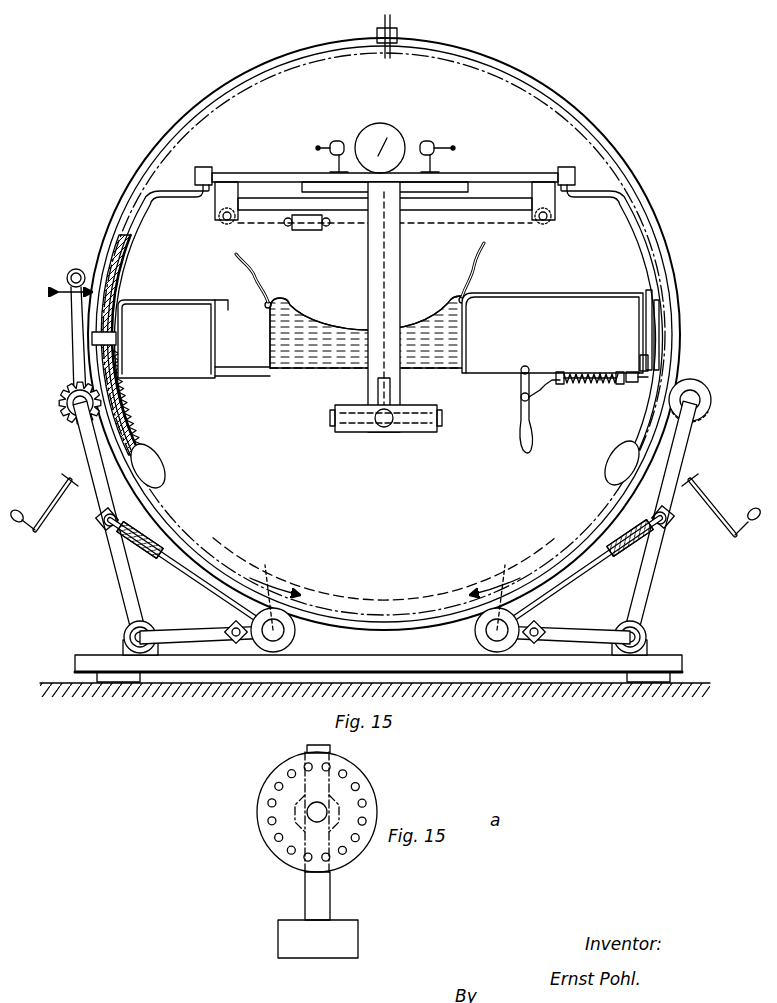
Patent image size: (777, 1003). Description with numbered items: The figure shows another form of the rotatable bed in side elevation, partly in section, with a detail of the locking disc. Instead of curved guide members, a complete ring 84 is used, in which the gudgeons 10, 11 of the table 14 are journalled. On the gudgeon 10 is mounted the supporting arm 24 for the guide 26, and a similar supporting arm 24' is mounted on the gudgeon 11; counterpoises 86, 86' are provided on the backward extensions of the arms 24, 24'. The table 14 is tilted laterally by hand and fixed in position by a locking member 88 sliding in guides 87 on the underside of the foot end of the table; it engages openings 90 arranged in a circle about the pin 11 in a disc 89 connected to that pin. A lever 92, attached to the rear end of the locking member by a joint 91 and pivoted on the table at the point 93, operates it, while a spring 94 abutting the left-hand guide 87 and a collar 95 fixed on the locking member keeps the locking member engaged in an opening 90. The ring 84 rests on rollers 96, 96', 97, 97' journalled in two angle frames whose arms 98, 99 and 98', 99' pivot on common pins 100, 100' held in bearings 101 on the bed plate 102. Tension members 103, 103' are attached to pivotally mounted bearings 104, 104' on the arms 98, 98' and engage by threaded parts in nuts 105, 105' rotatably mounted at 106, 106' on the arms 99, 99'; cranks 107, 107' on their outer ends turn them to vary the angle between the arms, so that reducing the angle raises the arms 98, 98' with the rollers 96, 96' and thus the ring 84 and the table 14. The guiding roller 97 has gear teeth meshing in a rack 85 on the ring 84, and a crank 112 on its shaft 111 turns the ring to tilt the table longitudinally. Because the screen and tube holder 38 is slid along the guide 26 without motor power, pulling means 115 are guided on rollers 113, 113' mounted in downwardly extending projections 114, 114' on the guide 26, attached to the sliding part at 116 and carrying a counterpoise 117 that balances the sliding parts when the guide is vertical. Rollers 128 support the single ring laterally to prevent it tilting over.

In FIG. 15, the ring 84 is at (532, 82).
In FIG. 15, the rollers 128 is at (400, 30).
In FIG. 15, the supporting arm 24 is at (158, 317).
In FIG. 15, the supporting arm 24' is at (611, 317).
In FIG. 15A, the supporting arm 24' is at (341, 808).
In FIG. 15, the rack 85 is at (112, 376).
In FIG. 15, the gudgeon 10 is at (114, 336).
In FIG. 15, the guide 26 is at (245, 178).
In FIG. 15, the pulling means 115 is at (495, 204).
In FIG. 15, the downwardly extending projection 114 is at (205, 209).
In FIG. 15, the roller 113 is at (211, 238).
In FIG. 15, the downwardly extending projection 114' is at (568, 204).
In FIG. 15, the roller 113' is at (558, 229).
In FIG. 15, the attachment point on sliding part 116 is at (385, 207).
In FIG. 15, the counterpoise 117 is at (300, 231).
In FIG. 15, the table 14 is at (255, 377).
In FIG. 15, the screen and tube holder 38 is at (382, 262).
In FIG. 15, the pivot point 93 is at (540, 362).
In FIG. 15, the stop 95 is at (600, 373).
In FIG. 15, the joint 91 is at (520, 399).
In FIG. 15, the lever 92 is at (522, 440).
In FIG. 15, the guides 87 is at (560, 384).
In FIG. 15, the spring 94 is at (590, 385).
In FIG. 15, the locking member 88 is at (634, 383).
In FIG. 15, the gudgeon 11 is at (660, 346).
In FIG. 15, the disc 89 is at (652, 362).
In FIG. 15A, the disc 89 is at (352, 822).
In FIG. 15, the openings 90 is at (650, 374).
In FIG. 15A, the openings 90 is at (333, 856).
In FIG. 15, the counterpoise 86 is at (163, 466).
In FIG. 15A, the counterpoise 86 is at (332, 915).
In FIG. 15, the counterpoise 86' is at (608, 463).
In FIG. 15, the crank 112 is at (78, 319).
In FIG. 15, the shaft 111 is at (74, 392).
In FIG. 15, the guiding roller 97 is at (61, 416).
In FIG. 15, the guiding roller 97' is at (706, 402).
In FIG. 15, the arm 99 is at (102, 520).
In FIG. 15, the arm 99' is at (663, 520).
In FIG. 15, the crank 107 is at (43, 502).
In FIG. 15, the crank 107' is at (722, 504).
In FIG. 15, the nut mounting 106 is at (80, 532).
In FIG. 15, the nut mounting 106' is at (695, 494).
In FIG. 15, the tension member 103 is at (191, 563).
In FIG. 15, the tension member 103' is at (578, 574).
In FIG. 15, the nut 105 is at (173, 514).
In FIG. 15, the nut 105' is at (656, 538).
In FIG. 15, the bed plate 102 is at (300, 665).
In FIG. 15, the pin 100 is at (123, 671).
In FIG. 15, the pin 100' is at (643, 669).
In FIG. 15, the bearing 101 is at (124, 645).
In FIG. 15, the arm 98 is at (206, 674).
In FIG. 15, the arm 98' is at (563, 673).
In FIG. 15, the pivotally mounted bearing 104 is at (219, 671).
In FIG. 15, the pivotally mounted bearing 104' is at (544, 616).
In FIG. 15, the roller 96 is at (262, 648).
In FIG. 15, the roller 96' is at (502, 642).